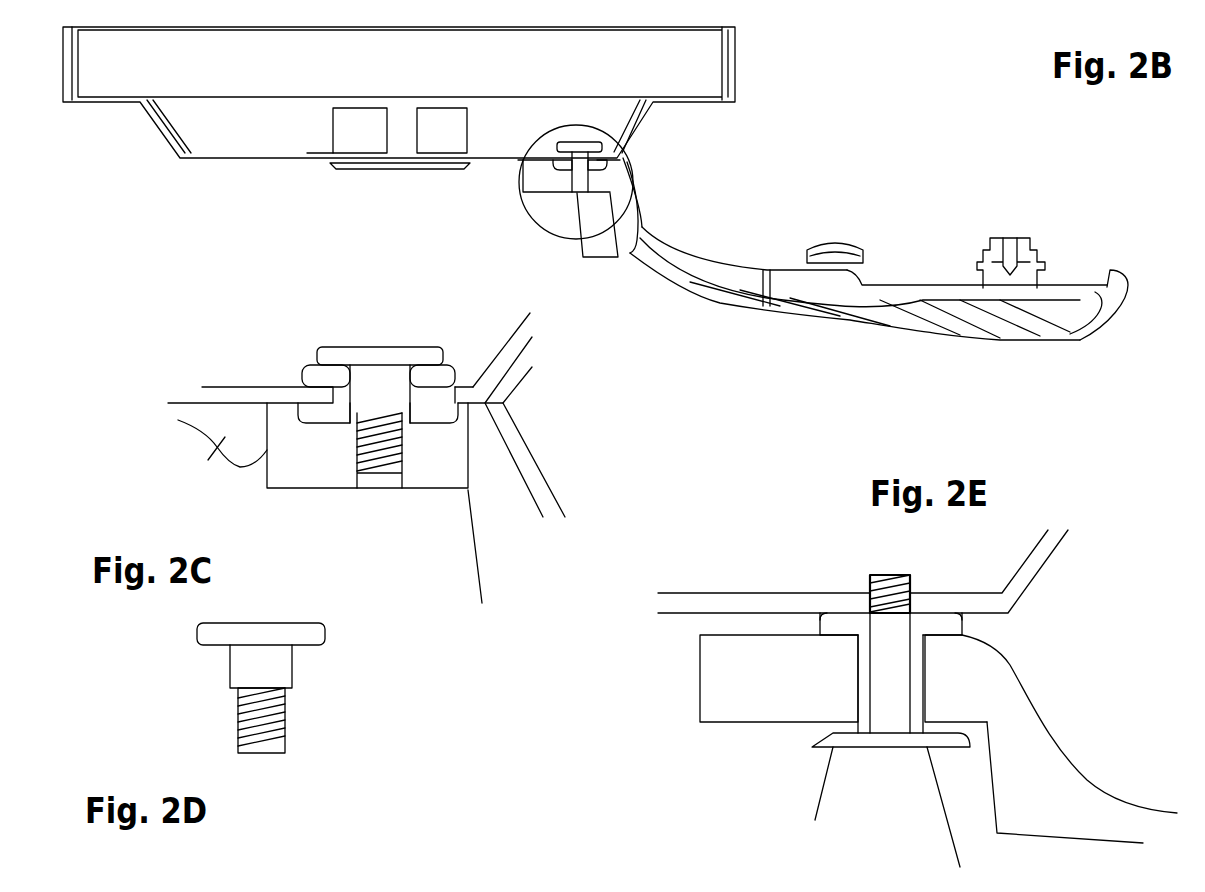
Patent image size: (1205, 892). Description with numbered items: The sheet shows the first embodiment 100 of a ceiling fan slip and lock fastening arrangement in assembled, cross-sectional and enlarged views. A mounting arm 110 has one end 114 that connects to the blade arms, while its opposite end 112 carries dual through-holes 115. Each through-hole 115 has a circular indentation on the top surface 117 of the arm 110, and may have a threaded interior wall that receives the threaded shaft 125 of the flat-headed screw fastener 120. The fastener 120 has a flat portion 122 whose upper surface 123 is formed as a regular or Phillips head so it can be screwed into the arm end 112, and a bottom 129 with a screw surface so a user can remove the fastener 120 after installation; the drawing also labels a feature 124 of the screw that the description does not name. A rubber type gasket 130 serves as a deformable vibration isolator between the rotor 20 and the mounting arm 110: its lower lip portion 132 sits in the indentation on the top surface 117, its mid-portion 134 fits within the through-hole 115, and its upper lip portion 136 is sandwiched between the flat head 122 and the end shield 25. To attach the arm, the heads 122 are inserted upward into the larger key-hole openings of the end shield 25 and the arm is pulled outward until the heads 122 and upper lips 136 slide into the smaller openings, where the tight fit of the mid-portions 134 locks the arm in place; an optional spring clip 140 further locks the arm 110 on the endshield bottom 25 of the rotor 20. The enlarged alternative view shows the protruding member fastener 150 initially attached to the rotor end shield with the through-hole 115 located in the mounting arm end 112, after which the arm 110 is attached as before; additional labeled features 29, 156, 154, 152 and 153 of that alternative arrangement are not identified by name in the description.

In FIG. 2B, the first embodiment 100 is at (897, 122).
In FIG. 2B, the end shield 25 is at (223, 160).
In FIG. 2C, the end shield 25 is at (202, 387).
In FIG. 2E, the end shield 25 is at (685, 593).
In FIG. 2B, the mounting arm 110 is at (667, 250).
In FIG. 2C, the mounting arm 110 is at (513, 503).
In FIG. 2E, the mounting arm 110 is at (1115, 812).
In FIG. 2B, the end of mounting arm 114 is at (823, 293).
In FIG. 2C, the slide and lock fastener 120 is at (370, 347).
In FIG. 2D, the slide and lock fastener 120 is at (219, 697).
In FIG. 2C, the flat portion 122 is at (423, 357).
In FIG. 2D, the flat portion 122 is at (320, 637).
In FIG. 2D, the upper surface 123 is at (263, 623).
In FIG. 2D, the shank 124 is at (292, 677).
In FIG. 2D, the threaded shaft 125 is at (285, 735).
In FIG. 2D, the bottom of fastener 129 is at (258, 755).
In FIG. 2C, the rubber type gasket 130 is at (310, 365).
In FIG. 2C, the lower lip portion 132 is at (438, 417).
In FIG. 2E, the lower lip portion 132 is at (833, 727).
In FIG. 2C, the mid-portion 134 is at (423, 387).
In FIG. 2E, the mid-portion 134 is at (920, 693).
In FIG. 2C, the upper lip portion 136 is at (417, 373).
In FIG. 2E, the upper lip portion 136 is at (962, 627).
In FIG. 2C, the through-hole 115 is at (403, 478).
In FIG. 2E, the through-hole 115 is at (855, 693).
In FIG. 2C, the top surface 117 is at (325, 423).
In FIG. 2C, the spring clip 140 is at (208, 462).
In FIG. 2E, the stud 29 is at (878, 571).
In FIG. 2E, the threaded stud portion 156 is at (887, 583).
In FIG. 2E, the bore 154 is at (913, 637).
In FIG. 2E, the rotor 20 is at (1038, 562).
In FIG. 2E, the end of mounting arm 112 is at (797, 691).
In FIG. 2E, the protruding member fastener 150 is at (903, 727).
In FIG. 2E, the first leg 152 is at (815, 820).
In FIG. 2E, the second leg 153 is at (960, 867).